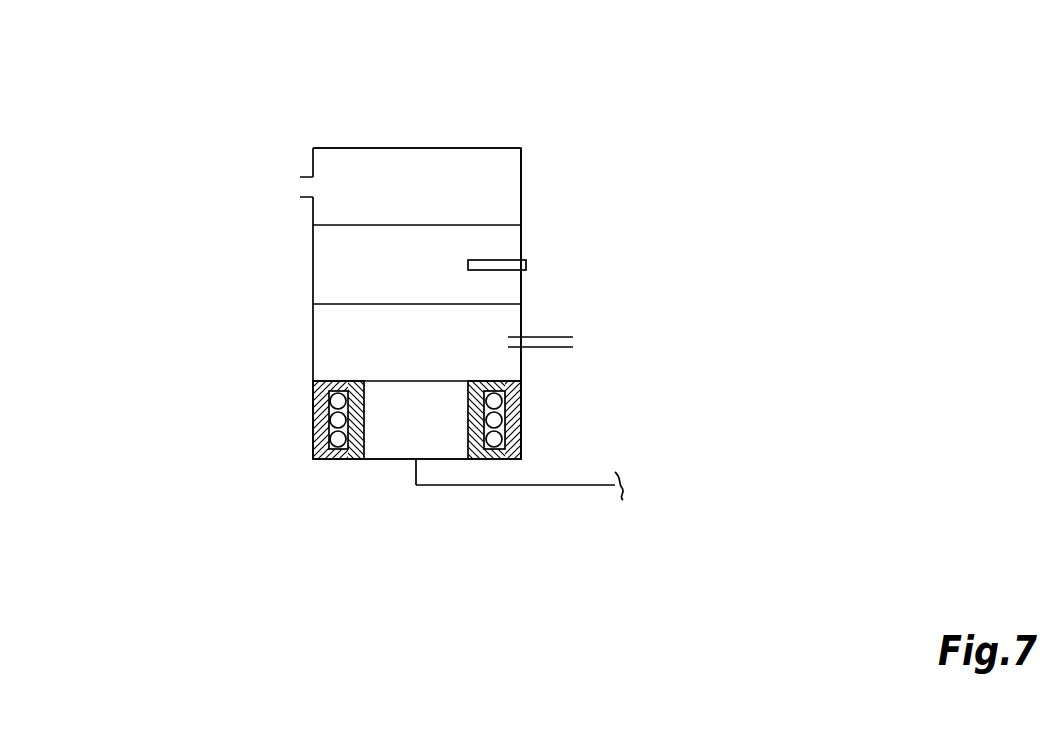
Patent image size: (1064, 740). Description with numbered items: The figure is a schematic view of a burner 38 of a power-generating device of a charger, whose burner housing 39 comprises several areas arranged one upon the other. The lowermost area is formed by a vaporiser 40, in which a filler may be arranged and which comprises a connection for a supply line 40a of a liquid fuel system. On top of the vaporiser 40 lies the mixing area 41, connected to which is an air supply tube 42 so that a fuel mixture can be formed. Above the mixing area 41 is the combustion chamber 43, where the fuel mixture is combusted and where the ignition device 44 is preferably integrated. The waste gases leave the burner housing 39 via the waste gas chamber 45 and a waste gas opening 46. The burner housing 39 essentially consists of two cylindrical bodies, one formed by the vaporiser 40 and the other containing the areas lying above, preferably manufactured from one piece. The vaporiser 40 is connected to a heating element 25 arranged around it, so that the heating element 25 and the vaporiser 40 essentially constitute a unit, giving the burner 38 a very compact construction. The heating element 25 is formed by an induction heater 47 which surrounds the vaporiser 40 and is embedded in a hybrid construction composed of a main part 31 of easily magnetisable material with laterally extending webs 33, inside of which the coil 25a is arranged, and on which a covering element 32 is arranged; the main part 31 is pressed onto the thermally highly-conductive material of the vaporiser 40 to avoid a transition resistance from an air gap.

The burner 38 is at (676, 105).
The burner housing 39 is at (524, 185).
The waste gas chamber 45 is at (453, 174).
The waste gas opening 46 is at (310, 185).
The combustion chamber 43 is at (353, 265).
The ignition device 44 is at (493, 265).
The mixing area 41 is at (350, 340).
The air supply tube 42 is at (547, 342).
The webs 33 is at (495, 384).
The covering element 32 is at (315, 403).
The main part 31 is at (332, 438).
The heating element 25 is at (495, 423).
The coil 25a is at (340, 421).
The vaporiser 40 is at (407, 423).
The supply line 40a is at (518, 484).
The induction heater 47 is at (280, 476).